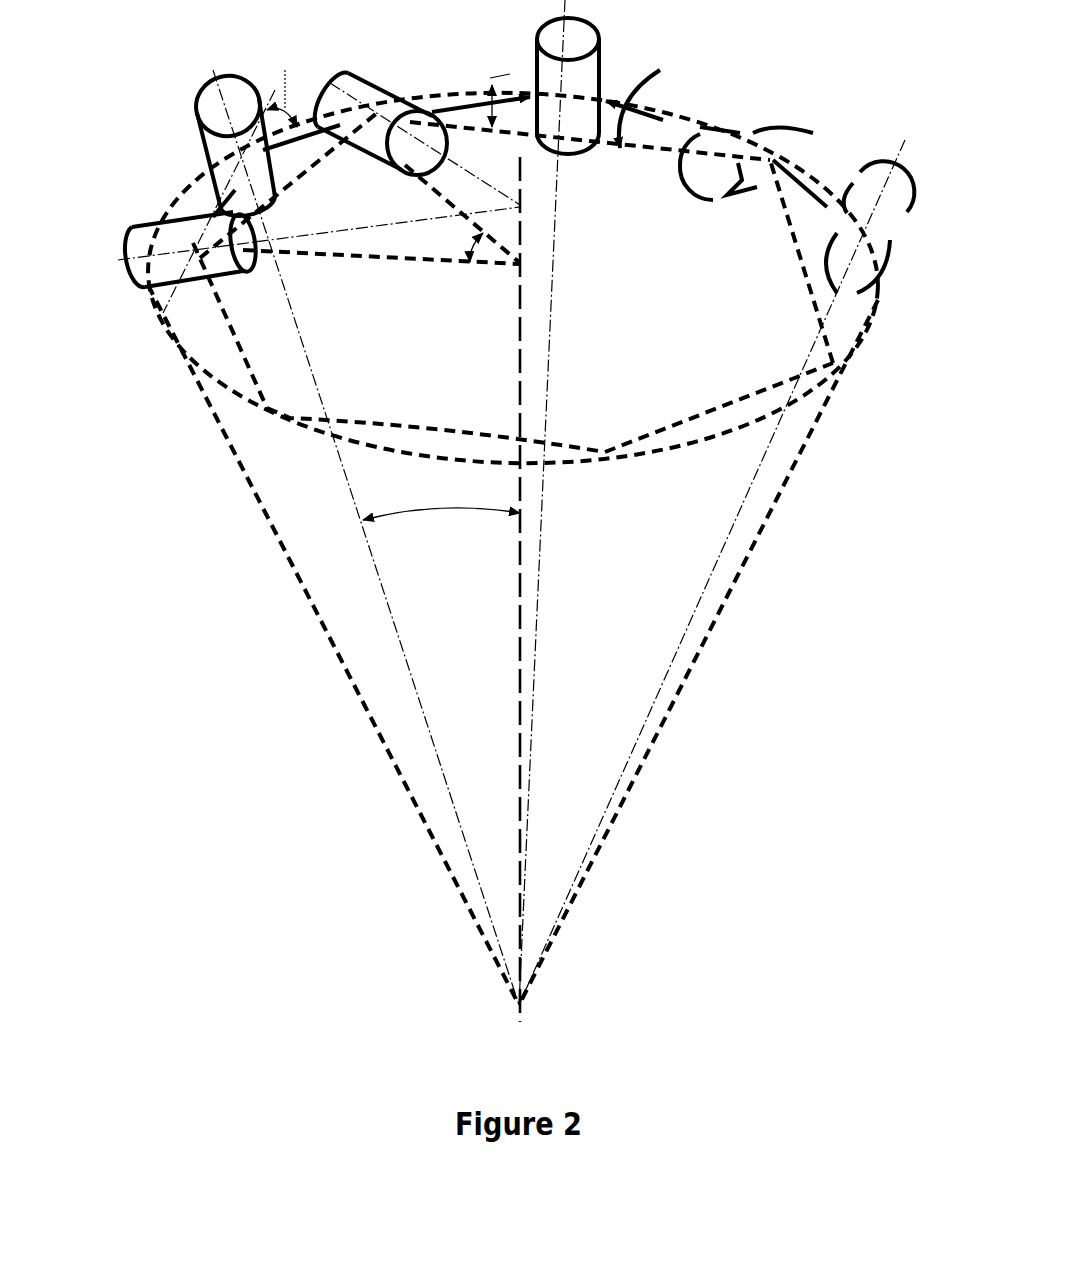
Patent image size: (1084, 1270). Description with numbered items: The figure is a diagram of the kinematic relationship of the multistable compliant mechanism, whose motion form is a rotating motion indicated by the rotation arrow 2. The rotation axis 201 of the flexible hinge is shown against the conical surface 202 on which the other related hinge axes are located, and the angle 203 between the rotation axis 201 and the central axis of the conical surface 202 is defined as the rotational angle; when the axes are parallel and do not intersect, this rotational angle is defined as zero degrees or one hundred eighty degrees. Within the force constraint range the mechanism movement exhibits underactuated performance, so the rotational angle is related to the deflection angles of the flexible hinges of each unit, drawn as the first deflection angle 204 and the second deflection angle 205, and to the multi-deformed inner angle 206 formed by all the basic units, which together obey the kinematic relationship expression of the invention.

The rotation direction of sensor 2 is at (633, 147).
The rotation axis of the flexible hinge 201 is at (208, 146).
The conical surface 202 is at (247, 490).
The rotational angle 203 is at (440, 513).
The deflection angle θ1 204 is at (310, 63).
The deflection angle θ2 205 is at (488, 82).
The multi-deformed inner angle φ 206 is at (517, 250).